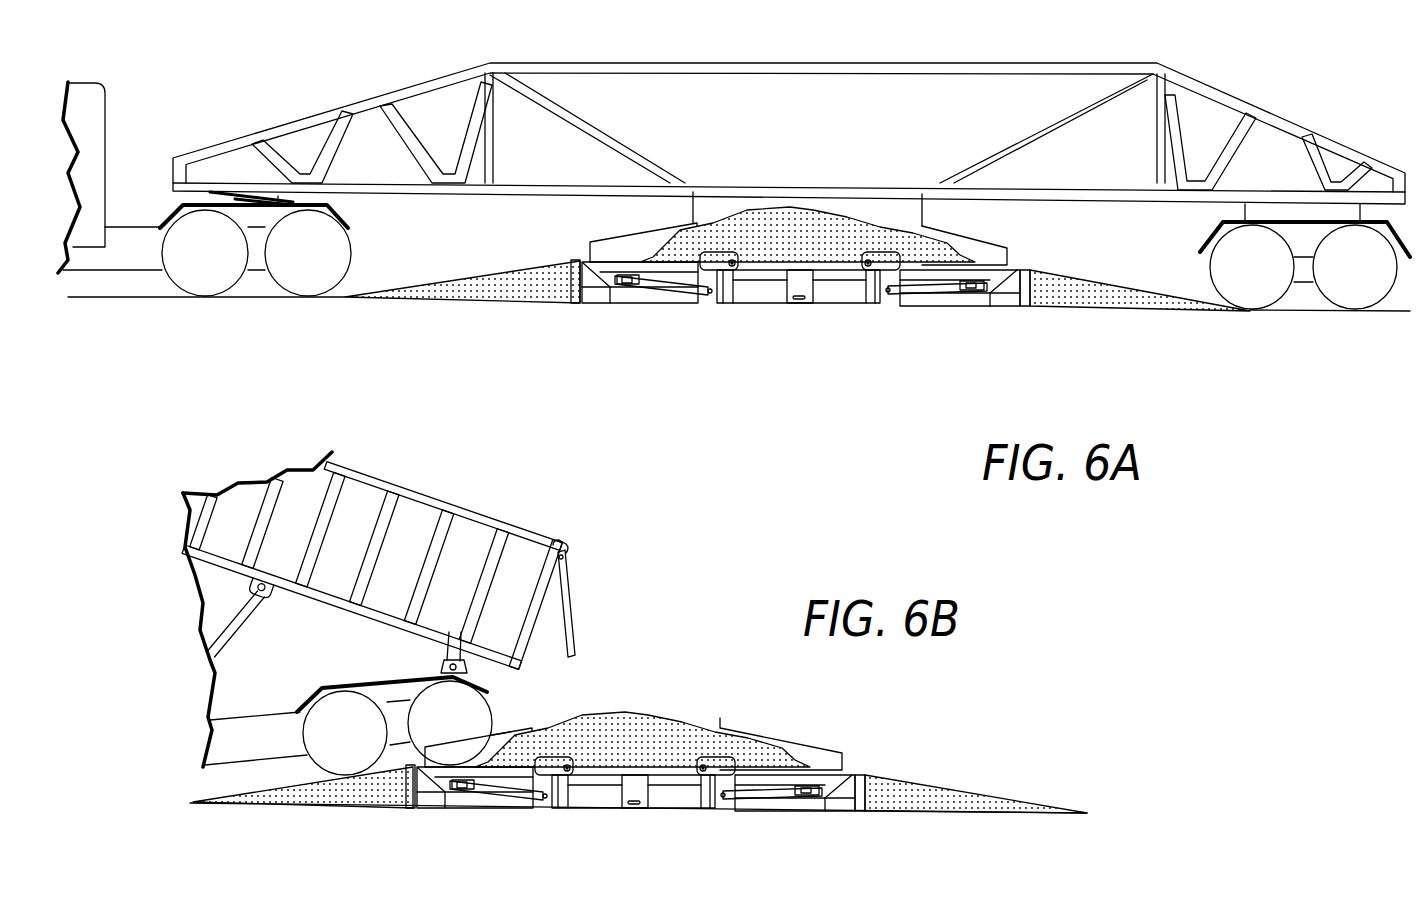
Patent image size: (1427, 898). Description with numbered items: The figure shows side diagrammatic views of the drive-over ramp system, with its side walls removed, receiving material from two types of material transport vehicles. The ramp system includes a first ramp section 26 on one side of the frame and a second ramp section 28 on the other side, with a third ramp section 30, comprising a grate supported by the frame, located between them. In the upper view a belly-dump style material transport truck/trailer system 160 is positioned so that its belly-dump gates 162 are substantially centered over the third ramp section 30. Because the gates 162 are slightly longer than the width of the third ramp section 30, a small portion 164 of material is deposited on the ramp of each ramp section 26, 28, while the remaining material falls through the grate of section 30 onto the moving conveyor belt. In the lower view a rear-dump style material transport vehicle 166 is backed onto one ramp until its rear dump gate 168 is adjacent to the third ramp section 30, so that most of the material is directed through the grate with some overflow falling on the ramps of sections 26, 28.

In FIG. 6A, the belly-dump style material transport truck/trailer system 160 is at (733, 72).
In FIG. 6A, the belly-dump gates 162 is at (890, 210).
In FIG. 6A, the portion of material 164 is at (673, 247).
In FIG. 6A, the first ramp section 26 is at (580, 307).
In FIG. 6A, the second ramp section 28 is at (1018, 313).
In FIG. 6A, the third ramp section 30 is at (897, 325).
In FIG. 6B, the rear-dump style material transport vehicle 166 is at (446, 496).
In FIG. 6B, the rear dump gate 168 is at (572, 630).